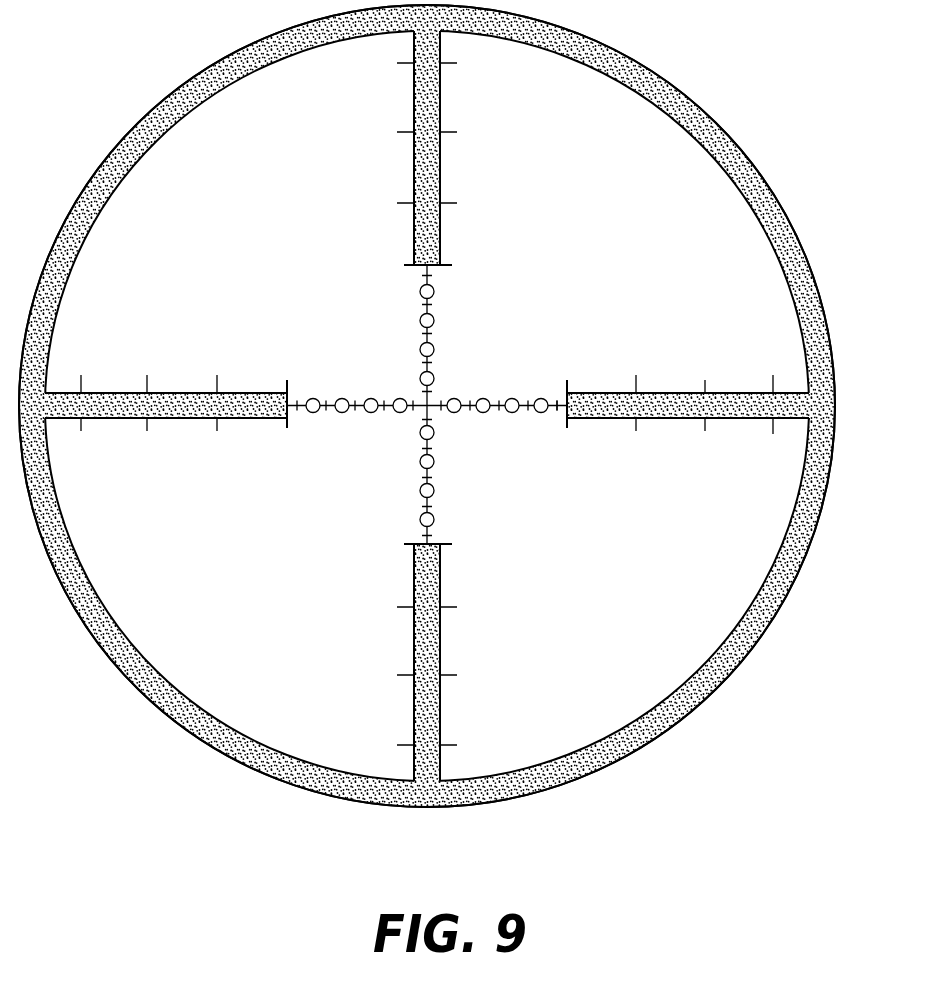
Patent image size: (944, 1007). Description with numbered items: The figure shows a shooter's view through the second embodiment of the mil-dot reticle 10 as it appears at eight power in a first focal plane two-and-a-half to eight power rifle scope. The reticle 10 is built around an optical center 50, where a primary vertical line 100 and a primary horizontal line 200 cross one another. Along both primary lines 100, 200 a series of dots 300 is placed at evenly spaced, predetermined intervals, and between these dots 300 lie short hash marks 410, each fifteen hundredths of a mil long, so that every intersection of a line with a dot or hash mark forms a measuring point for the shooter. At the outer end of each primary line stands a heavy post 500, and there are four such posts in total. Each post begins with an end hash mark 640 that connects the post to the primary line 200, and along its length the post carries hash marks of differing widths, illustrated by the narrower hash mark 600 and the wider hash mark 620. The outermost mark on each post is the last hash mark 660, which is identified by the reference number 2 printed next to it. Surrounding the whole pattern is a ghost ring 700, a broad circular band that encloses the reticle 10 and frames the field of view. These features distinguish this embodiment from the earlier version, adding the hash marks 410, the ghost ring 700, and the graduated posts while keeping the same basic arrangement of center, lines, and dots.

The reticle 10 is at (733, 140).
The ghost ring 700 is at (751, 668).
The primary vertical line 100 is at (452, 266).
The optical center 50 is at (423, 410).
The dots 300 is at (435, 322).
The hash marks 410 is at (528, 413).
The primary horizontal line 200 is at (554, 402).
The post 500 is at (665, 393).
The end hash mark 640 is at (567, 426).
The hash mark 600 is at (636, 431).
The hash mark 620 is at (705, 431).
The last hash mark 660 is at (771, 434).
The reference number 2 is at (428, 403).